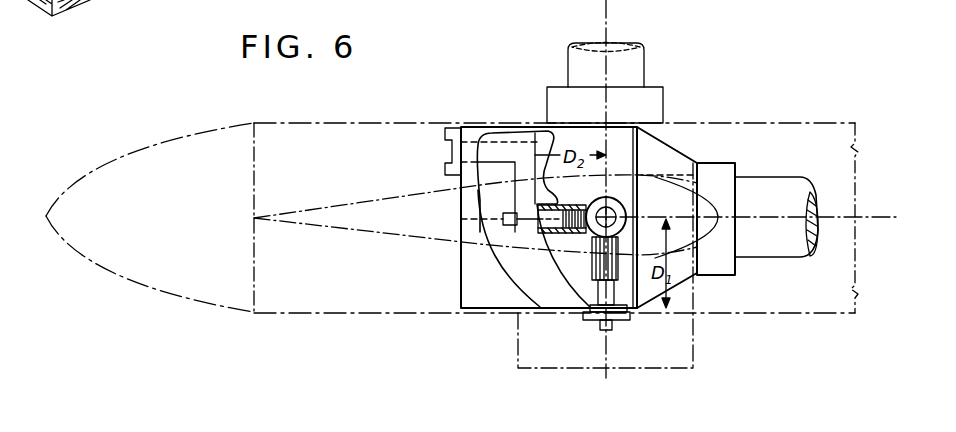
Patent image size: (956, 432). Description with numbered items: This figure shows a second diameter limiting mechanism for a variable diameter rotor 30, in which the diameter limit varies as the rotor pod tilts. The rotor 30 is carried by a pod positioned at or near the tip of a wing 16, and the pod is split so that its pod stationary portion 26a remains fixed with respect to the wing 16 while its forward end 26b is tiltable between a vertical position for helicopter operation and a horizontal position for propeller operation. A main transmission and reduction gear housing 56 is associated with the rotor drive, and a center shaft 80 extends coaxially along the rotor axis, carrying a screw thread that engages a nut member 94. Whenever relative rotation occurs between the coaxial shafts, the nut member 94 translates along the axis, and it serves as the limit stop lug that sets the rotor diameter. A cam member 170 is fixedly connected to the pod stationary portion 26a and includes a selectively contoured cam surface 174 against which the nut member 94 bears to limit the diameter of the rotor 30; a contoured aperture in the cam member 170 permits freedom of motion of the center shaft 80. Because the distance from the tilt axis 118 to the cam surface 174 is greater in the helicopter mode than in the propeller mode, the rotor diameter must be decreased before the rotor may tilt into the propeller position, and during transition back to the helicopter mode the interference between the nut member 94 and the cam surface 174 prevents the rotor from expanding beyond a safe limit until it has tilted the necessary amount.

The wing 16 is at (339, 212).
The pod stationary portion 26a is at (172, 150).
The forward end of pod 26b is at (822, 130).
The variable diameter rotor 30 is at (647, 50).
The main transmission and reduction gear housing 56 is at (655, 98).
The center shaft 80 is at (461, 221).
The nut member 94 is at (547, 238).
The tilt axis 118 is at (616, 212).
The cam member 170 is at (498, 150).
The cam surface 174 is at (563, 275).